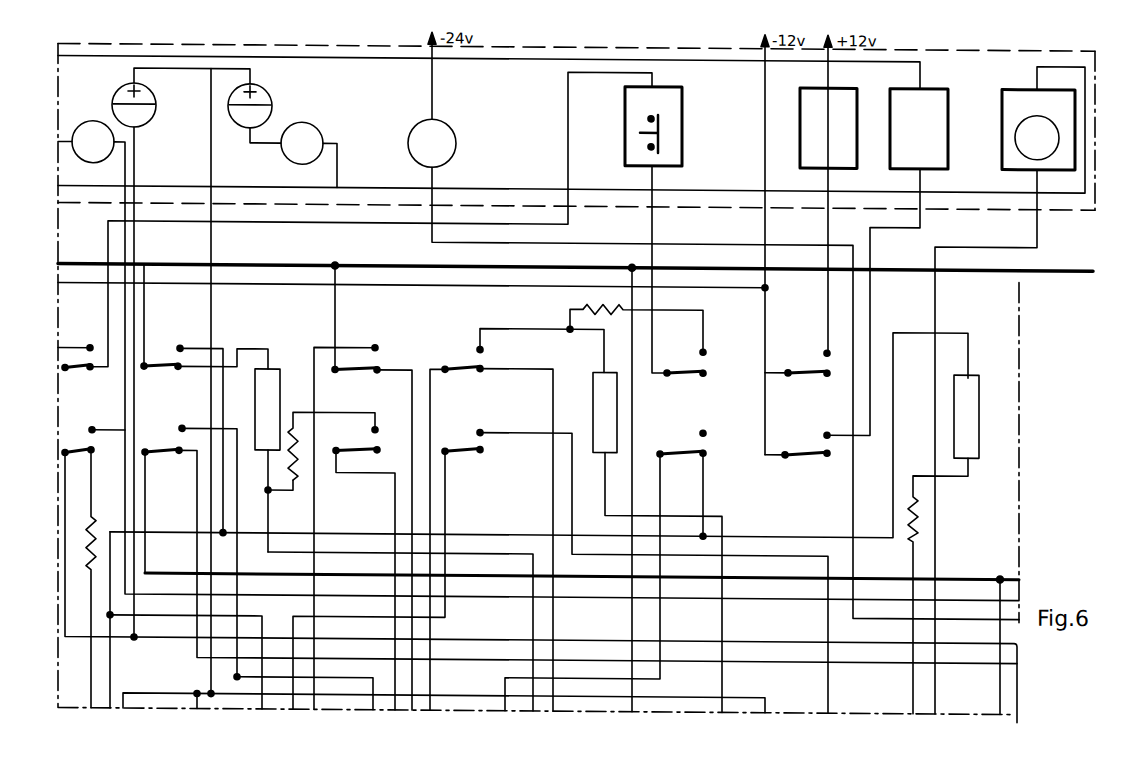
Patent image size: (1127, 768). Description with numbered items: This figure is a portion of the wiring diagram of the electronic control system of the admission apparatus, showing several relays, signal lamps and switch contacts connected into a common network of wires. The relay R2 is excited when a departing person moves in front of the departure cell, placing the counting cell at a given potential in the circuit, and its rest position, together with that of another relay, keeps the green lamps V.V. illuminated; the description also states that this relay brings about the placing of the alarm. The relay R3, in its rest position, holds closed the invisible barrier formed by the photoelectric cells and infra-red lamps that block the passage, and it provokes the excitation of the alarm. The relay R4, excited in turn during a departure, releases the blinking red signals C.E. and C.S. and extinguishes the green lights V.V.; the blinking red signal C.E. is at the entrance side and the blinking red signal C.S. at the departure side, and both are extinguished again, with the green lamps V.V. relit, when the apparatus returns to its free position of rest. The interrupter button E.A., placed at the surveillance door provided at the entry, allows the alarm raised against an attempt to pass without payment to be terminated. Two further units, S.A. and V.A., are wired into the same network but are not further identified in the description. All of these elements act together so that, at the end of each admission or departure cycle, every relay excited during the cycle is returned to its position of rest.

The relay R2 is at (255, 409).
The relay R3 is at (593, 412).
The relay R4 is at (979, 416).
The interrupter button E.A. is at (675, 143).
The unit S.A. is at (828, 128).
The unit V.A. is at (919, 129).
The green lamps V.V. is at (741, 128).
The blinking red signal at the entrance side C.E. is at (93, 142).
The blinking red signal at the departure side C.S. is at (302, 143).